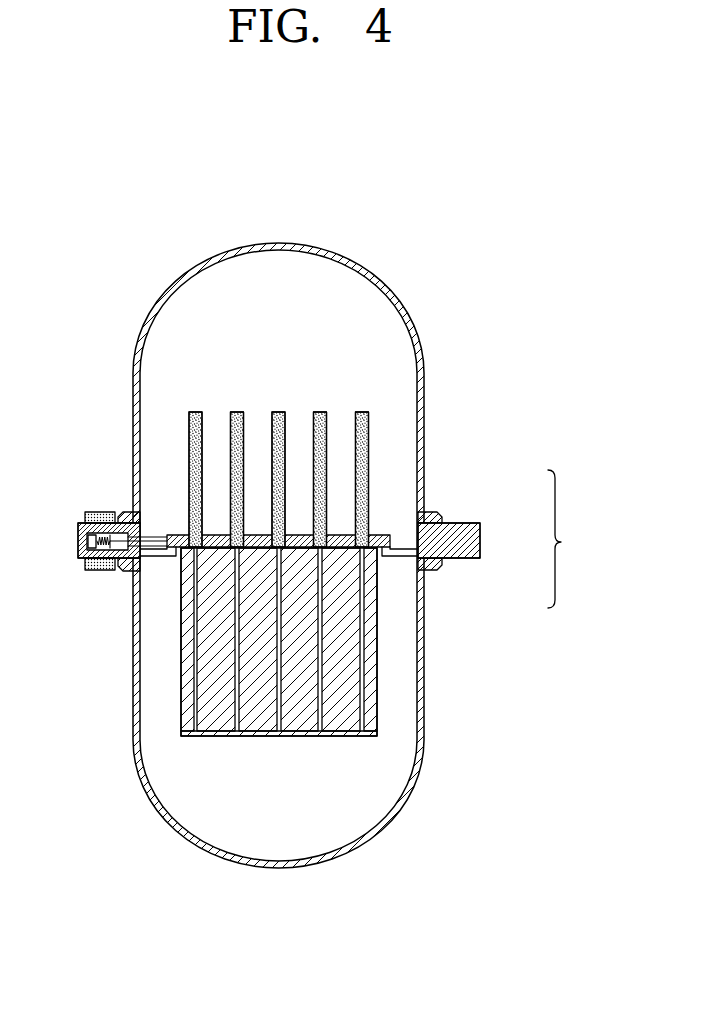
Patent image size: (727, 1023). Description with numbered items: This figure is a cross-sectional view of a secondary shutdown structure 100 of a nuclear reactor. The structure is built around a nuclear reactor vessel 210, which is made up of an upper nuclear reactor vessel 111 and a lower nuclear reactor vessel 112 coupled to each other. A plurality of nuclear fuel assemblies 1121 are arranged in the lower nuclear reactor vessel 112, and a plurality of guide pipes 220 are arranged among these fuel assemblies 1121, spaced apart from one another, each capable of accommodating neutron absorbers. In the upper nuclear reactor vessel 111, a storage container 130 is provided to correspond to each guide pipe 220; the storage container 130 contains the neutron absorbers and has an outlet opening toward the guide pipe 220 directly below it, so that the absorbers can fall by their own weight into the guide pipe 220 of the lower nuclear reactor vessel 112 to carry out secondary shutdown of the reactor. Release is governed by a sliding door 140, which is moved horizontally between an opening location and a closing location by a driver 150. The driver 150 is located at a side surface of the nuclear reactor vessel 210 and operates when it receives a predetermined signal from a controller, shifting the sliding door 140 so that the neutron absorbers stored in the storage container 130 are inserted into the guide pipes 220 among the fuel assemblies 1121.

The secondary shutdown structure 100 is at (340, 521).
The upper nuclear reactor vessel 111 is at (425, 488).
The lower nuclear reactor vessel 112 is at (425, 598).
The nuclear reactor vessel 210 is at (512, 539).
The storage container 130 is at (368, 433).
The sliding door 140 is at (182, 540).
The driver 150 is at (76, 568).
The guide pipe 220 is at (341, 642).
The nuclear fuel assembly 1121 is at (338, 711).